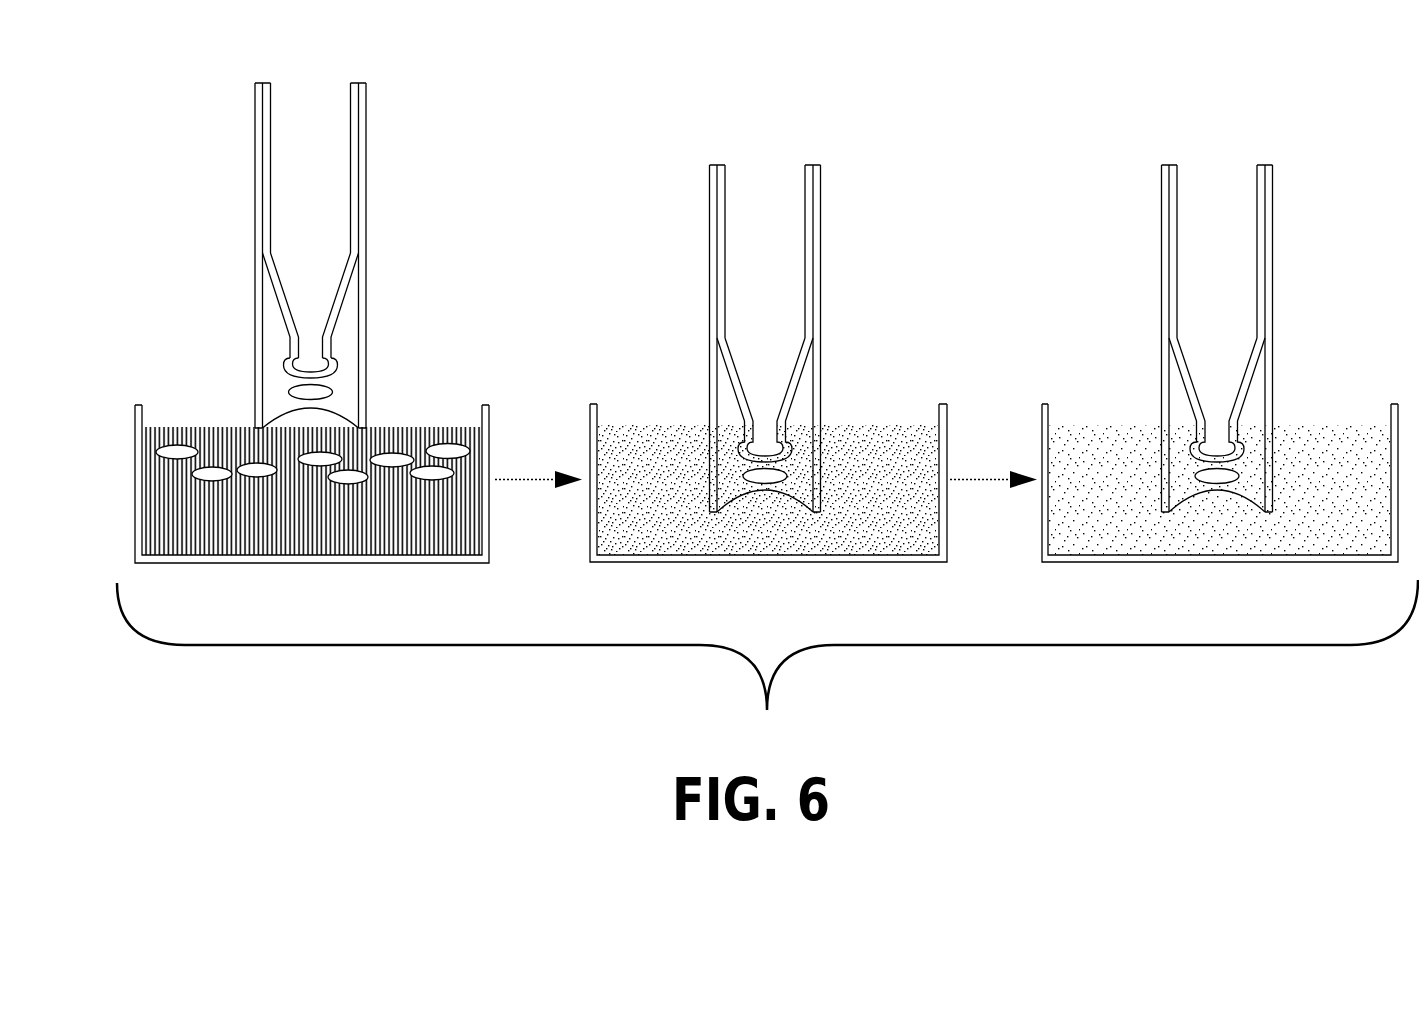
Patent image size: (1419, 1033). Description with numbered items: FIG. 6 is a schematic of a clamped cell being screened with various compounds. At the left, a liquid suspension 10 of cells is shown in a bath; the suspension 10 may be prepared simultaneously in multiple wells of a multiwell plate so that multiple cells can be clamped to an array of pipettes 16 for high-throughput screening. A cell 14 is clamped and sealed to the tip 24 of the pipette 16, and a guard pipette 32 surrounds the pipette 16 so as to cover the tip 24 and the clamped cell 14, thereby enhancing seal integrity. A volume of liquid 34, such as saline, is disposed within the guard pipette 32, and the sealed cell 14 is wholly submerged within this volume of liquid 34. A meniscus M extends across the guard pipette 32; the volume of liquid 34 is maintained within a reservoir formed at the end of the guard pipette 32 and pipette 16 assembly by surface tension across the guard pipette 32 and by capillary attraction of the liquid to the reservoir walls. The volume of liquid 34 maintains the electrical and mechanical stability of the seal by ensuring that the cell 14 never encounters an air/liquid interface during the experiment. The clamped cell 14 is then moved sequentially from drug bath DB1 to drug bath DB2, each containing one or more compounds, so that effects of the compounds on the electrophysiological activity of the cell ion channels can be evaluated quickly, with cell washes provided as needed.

The liquid suspension 10 is at (170, 406).
The clamped cell 14 is at (195, 481).
The pipette 16 is at (342, 277).
The tip 24 is at (337, 363).
The guard pipette 32 is at (367, 338).
The volume of liquid 34 is at (272, 388).
The meniscus M is at (275, 433).
The drug bath DB1 is at (638, 453).
The drug bath DB2 is at (1092, 458).